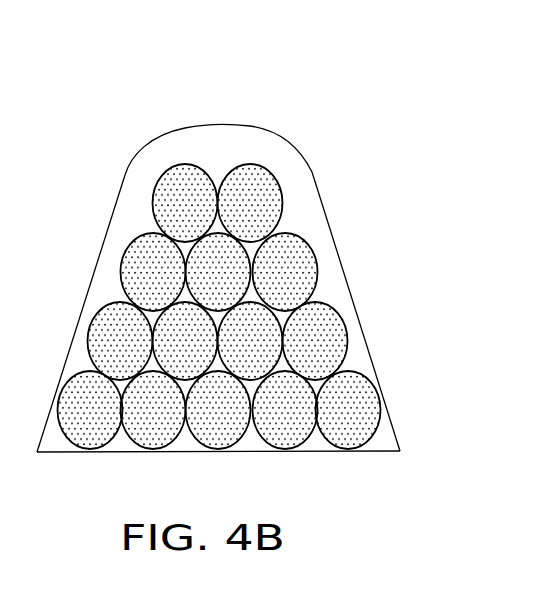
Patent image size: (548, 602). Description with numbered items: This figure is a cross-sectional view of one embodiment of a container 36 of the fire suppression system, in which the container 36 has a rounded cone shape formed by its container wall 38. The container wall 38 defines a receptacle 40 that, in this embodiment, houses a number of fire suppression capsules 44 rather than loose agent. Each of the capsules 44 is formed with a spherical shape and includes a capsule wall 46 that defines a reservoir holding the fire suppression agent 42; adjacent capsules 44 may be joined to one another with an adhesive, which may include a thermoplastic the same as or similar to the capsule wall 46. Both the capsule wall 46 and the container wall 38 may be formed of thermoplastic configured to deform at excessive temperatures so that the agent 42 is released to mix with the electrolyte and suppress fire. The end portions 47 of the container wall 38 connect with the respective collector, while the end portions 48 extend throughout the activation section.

The container 36 is at (370, 159).
The container wall 38 is at (231, 137).
The receptacle 40 is at (300, 195).
The fire suppression agent 42 is at (315, 322).
The fire suppression capsules 44 is at (371, 377).
The capsule wall 46 is at (378, 393).
The end portions 47 is at (54, 476).
The end portions 48 is at (211, 85).